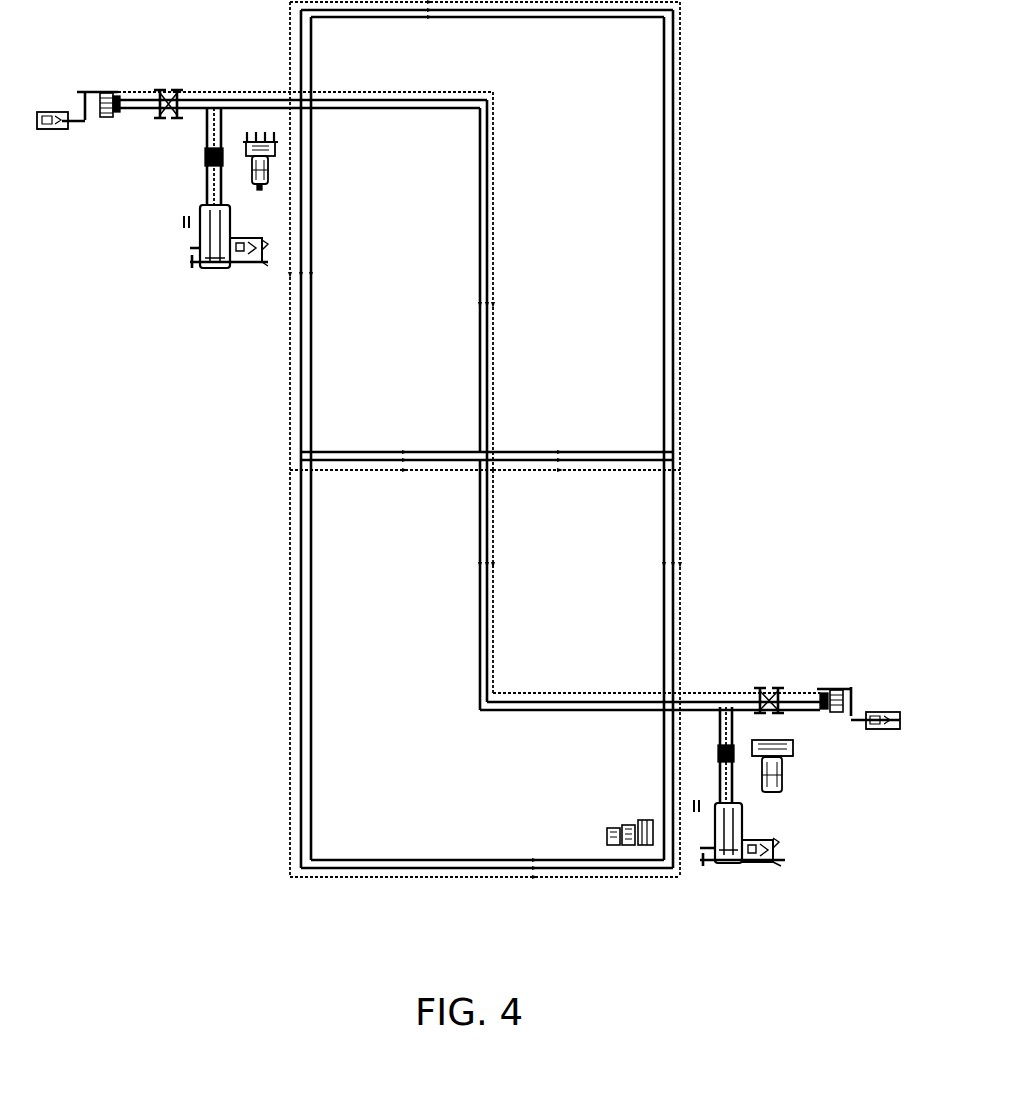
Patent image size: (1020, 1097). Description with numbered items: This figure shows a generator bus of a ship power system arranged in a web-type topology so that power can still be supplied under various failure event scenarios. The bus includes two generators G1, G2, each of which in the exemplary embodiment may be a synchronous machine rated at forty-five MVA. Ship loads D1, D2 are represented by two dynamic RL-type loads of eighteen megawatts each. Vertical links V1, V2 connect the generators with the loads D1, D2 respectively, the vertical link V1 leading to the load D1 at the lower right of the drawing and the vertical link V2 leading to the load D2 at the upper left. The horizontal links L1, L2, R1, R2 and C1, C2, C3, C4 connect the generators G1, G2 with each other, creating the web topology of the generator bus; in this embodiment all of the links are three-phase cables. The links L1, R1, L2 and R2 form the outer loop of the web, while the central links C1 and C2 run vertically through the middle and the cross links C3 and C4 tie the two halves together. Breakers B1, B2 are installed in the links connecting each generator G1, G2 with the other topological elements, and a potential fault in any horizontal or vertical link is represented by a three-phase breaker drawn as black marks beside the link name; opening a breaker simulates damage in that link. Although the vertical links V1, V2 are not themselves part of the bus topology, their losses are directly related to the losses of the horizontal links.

The horizontal link L1 is at (485, 27).
The horizontal link L2 is at (657, 439).
The horizontal link R1 is at (318, 439).
The horizontal link R2 is at (485, 853).
The horizontal link C1 is at (468, 281).
The horizontal link C2 is at (468, 581).
The horizontal link C3 is at (391, 442).
The horizontal link C4 is at (583, 476).
The breaker B1 is at (712, 755).
The breaker B2 is at (197, 156).
The generator G1 is at (761, 834).
The generator G2 is at (204, 236).
The vertical link V1 is at (768, 685).
The vertical link V2 is at (167, 86).
The ship load D1 is at (858, 693).
The ship load D2 is at (78, 92).